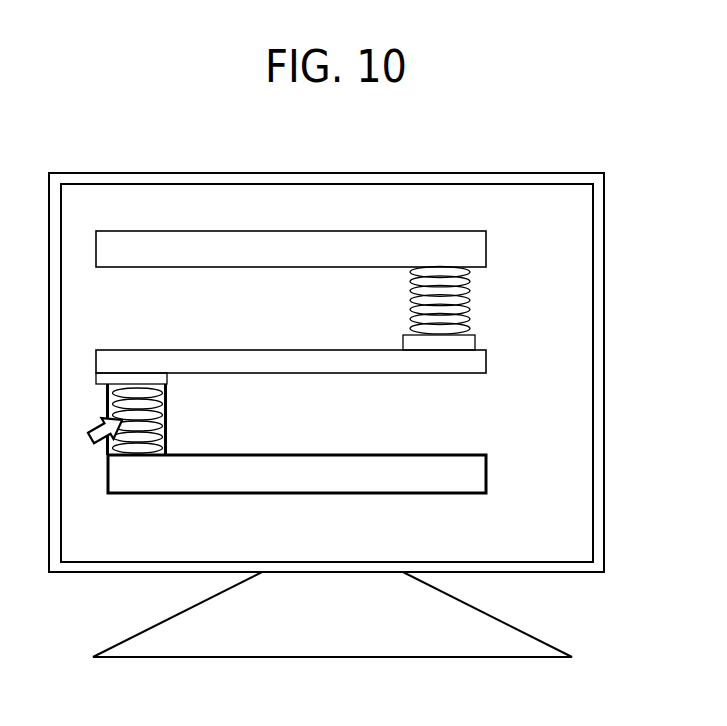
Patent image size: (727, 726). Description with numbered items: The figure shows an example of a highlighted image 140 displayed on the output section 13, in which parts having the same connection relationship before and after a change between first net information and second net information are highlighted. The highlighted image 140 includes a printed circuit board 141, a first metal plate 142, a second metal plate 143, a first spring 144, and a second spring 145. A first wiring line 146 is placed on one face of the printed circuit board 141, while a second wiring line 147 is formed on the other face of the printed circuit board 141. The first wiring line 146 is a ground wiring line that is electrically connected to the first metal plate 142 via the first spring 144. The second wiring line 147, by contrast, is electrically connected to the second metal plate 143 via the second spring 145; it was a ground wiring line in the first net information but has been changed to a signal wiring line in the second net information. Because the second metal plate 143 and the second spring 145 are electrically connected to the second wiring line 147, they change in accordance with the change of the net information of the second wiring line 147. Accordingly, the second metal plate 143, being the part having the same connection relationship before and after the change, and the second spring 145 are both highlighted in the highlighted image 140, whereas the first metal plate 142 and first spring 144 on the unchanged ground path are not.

The output section 13 is at (604, 337).
The highlighted image 140 is at (554, 533).
The printed circuit board 141 is at (487, 361).
The first metal plate 142 is at (487, 249).
The second metal plate 143 is at (488, 472).
The first spring 144 is at (410, 318).
The second spring 145 is at (167, 433).
The first wiring line 146 is at (473, 340).
The second wiring line 147 is at (167, 382).